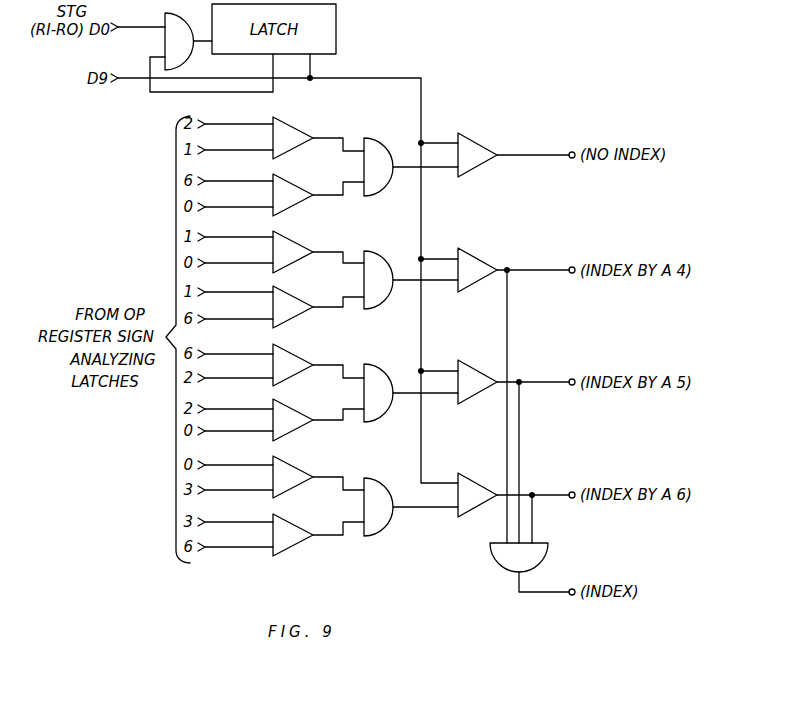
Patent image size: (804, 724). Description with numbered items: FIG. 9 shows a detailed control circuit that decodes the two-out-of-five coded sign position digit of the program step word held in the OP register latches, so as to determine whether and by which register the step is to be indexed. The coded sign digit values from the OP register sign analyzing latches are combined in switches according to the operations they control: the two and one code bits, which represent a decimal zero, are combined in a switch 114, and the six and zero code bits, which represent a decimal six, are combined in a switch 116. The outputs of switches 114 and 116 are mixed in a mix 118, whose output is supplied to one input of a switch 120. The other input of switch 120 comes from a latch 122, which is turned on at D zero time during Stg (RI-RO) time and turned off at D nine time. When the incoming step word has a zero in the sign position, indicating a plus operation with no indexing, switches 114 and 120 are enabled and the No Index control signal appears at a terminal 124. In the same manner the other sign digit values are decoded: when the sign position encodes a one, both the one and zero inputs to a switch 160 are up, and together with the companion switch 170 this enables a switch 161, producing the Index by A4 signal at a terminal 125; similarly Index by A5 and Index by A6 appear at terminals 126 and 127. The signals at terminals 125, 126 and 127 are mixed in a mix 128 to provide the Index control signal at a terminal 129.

The switch 114 is at (273, 158).
The switch 116 is at (275, 213).
The mix 118 is at (369, 197).
The switch 120 is at (460, 176).
The latch 122 is at (236, 57).
The terminal 124 is at (568, 158).
The terminal 125 is at (571, 274).
The terminal 126 is at (571, 386).
The terminal 127 is at (572, 498).
The mix 128 is at (517, 569).
The terminal 129 is at (571, 595).
The switch 160 is at (275, 270).
The switch 161 is at (460, 290).
The switch 170 is at (275, 326).